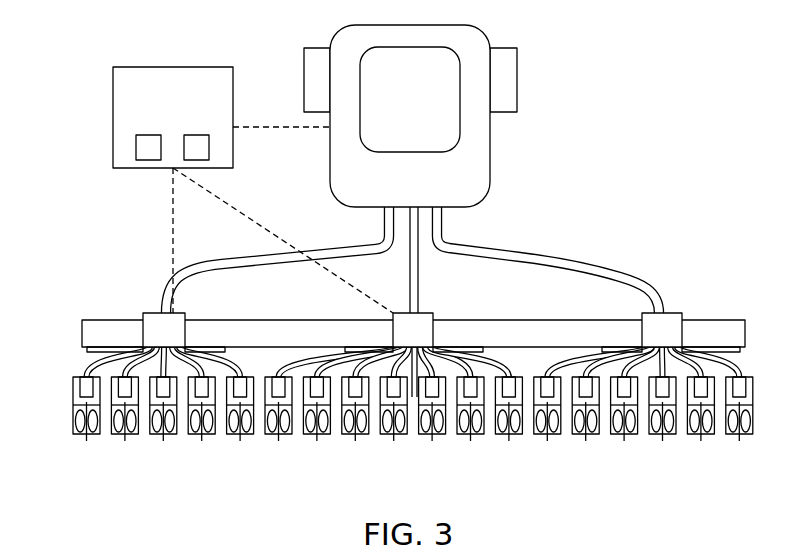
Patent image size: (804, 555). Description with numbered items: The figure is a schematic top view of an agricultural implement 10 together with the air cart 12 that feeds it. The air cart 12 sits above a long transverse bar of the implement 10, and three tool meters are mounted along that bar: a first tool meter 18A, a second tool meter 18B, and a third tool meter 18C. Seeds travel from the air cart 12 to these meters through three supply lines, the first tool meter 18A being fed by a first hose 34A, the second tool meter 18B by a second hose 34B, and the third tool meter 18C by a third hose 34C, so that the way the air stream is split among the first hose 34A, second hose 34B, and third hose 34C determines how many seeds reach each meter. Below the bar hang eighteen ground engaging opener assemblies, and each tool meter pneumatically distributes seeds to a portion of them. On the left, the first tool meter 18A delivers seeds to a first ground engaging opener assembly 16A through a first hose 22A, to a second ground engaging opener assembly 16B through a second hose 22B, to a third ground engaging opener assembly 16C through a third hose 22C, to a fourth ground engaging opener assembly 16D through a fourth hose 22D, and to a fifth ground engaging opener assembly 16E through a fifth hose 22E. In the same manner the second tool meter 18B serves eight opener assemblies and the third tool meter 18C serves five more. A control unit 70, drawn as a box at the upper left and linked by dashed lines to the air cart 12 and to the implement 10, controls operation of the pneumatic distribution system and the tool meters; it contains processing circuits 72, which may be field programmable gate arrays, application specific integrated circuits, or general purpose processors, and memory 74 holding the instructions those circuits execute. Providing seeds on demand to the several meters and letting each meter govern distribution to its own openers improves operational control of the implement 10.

The agricultural implement 10 is at (747, 333).
The air cart 12 is at (491, 150).
The first ground engaging opener assembly 16A is at (87, 438).
The second ground engaging opener assembly 16B is at (125, 439).
The third ground engaging opener assembly 16C is at (163, 440).
The fourth ground engaging opener assembly 16D is at (202, 440).
The fifth ground engaging opener assembly 16E is at (240, 440).
The first tool meter 18A is at (142, 313).
The second tool meter 18B is at (433, 333).
The third tool meter 18C is at (683, 330).
The first hose 22A is at (92, 370).
The second hose 22B is at (120, 355).
The third hose 22C is at (133, 353).
The fourth hose 22D is at (212, 355).
The fifth hose 22E is at (250, 357).
The first hose 34A is at (215, 260).
The second hose 34B is at (420, 278).
The third hose 34C is at (556, 258).
The control unit 70 is at (173, 96).
The processing circuits 72 is at (136, 150).
The memory 74 is at (209, 150).